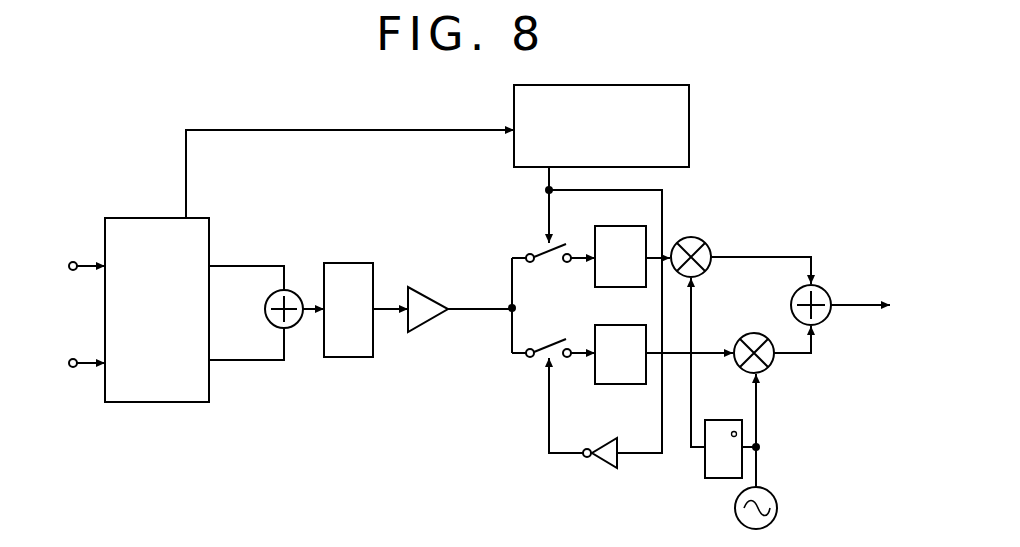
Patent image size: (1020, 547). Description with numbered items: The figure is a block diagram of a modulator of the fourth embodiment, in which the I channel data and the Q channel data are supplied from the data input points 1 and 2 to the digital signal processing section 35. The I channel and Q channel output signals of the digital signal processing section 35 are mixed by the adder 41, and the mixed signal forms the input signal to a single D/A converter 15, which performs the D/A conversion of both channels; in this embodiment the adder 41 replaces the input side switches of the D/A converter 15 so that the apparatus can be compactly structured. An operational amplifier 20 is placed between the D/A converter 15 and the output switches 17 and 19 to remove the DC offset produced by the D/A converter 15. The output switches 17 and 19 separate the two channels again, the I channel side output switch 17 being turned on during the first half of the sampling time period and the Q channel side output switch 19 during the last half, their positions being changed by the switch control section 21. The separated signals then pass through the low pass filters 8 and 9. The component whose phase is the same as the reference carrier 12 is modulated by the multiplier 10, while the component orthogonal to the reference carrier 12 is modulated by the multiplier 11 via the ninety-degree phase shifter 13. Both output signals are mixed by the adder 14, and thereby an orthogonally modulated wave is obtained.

The data input point 1 is at (72, 261).
The data input point 2 is at (72, 358).
The digital signal processing section 35 is at (152, 218).
The adder 41 is at (287, 290).
The D/A converter 15 is at (345, 263).
The operational amplifier 20 is at (424, 287).
The switch control section 21 is at (689, 128).
The output switch 17 is at (557, 246).
The output switch 19 is at (552, 342).
The low pass filter 8 is at (630, 226).
The low pass filter 9 is at (620, 384).
The multiplier 10 is at (705, 239).
The multiplier 11 is at (751, 333).
The 90° phase shifter 13 is at (725, 420).
The reference carrier 12 is at (777, 498).
The adder 14 is at (826, 285).